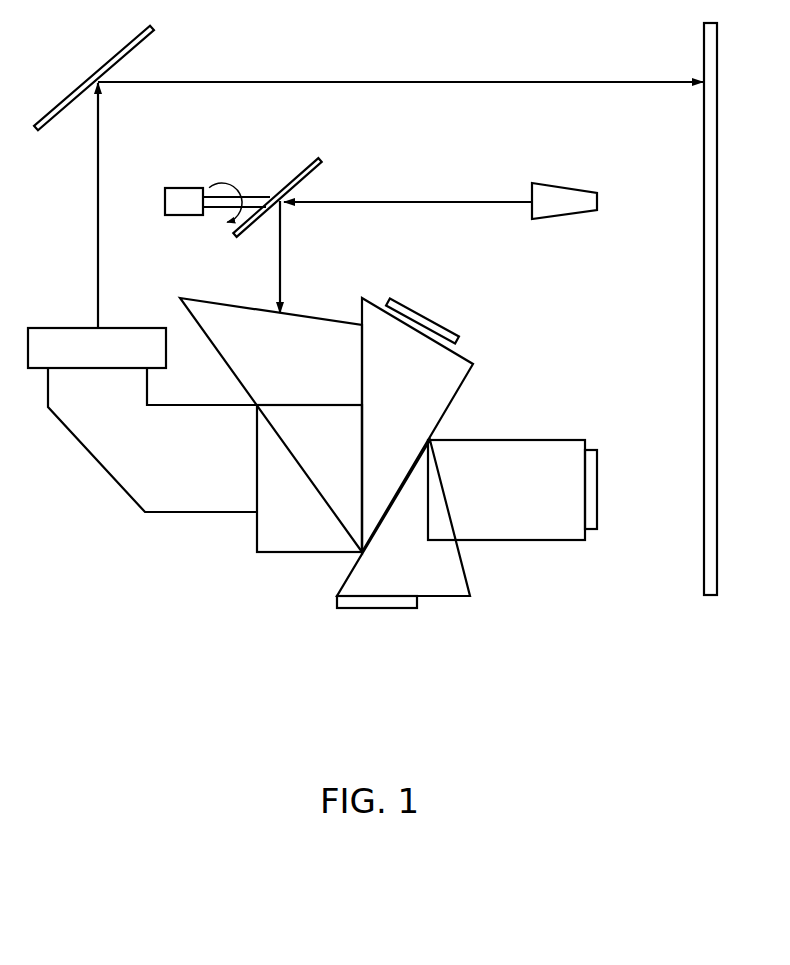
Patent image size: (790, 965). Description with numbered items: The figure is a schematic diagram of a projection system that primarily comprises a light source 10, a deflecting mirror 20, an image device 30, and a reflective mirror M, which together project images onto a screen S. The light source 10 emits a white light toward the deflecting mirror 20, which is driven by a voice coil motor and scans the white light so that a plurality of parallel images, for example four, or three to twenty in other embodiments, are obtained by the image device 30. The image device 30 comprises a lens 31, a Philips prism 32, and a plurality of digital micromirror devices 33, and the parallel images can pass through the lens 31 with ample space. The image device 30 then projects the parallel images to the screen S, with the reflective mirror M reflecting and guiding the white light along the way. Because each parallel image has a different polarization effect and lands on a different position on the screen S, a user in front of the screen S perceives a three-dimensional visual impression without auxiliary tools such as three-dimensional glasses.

The light source 10 is at (564, 186).
The deflecting mirror 20 is at (318, 163).
The image device 30 is at (82, 456).
The lens 31 is at (58, 345).
The Philips prism 32 is at (297, 525).
The digital micromirror devices 33 is at (427, 318).
The reflective mirror M is at (93, 78).
The screen S is at (707, 310).